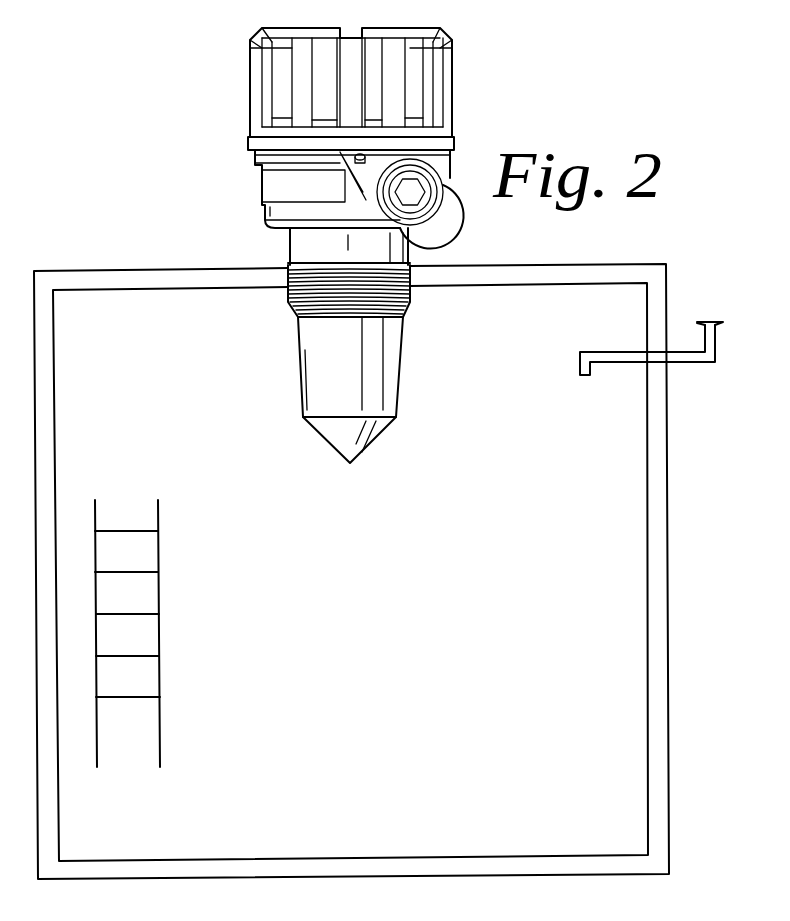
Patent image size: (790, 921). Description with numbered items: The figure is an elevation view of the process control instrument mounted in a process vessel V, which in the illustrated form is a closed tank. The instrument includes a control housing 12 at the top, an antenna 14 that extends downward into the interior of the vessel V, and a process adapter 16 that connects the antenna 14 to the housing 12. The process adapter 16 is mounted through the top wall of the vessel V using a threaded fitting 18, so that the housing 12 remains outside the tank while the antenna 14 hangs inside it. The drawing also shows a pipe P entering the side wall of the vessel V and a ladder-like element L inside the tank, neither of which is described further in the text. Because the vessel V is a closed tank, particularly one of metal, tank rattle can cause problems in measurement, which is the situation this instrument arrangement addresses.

The control housing 12 is at (280, 183).
The antenna 14 is at (300, 400).
The process adapter 16 is at (320, 245).
The threaded fitting 18 is at (403, 300).
The liquid level / ladder indicator L is at (172, 597).
The process vessel V is at (655, 297).
The pipe P is at (628, 356).